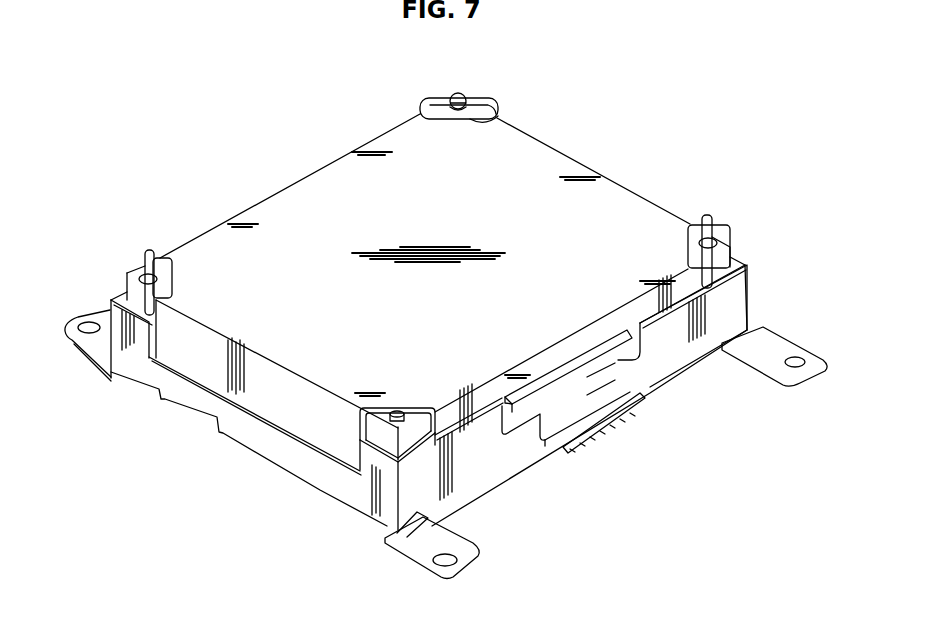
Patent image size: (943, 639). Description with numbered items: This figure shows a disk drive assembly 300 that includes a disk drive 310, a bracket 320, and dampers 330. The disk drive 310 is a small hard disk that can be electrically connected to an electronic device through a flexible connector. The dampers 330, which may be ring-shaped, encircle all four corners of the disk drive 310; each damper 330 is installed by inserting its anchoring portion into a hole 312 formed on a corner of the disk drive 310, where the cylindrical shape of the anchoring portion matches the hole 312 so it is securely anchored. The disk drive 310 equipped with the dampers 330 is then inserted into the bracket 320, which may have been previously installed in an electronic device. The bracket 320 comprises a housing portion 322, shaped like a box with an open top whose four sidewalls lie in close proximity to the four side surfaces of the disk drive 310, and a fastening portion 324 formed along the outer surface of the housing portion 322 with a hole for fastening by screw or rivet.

The disk drive assembly 300 is at (186, 76).
The disk drive 310 is at (587, 212).
The hole 312 is at (500, 123).
The bracket 320 is at (542, 458).
The housing portion 322 is at (742, 302).
The fastening portion 324 is at (765, 363).
The damper 330 is at (146, 252).